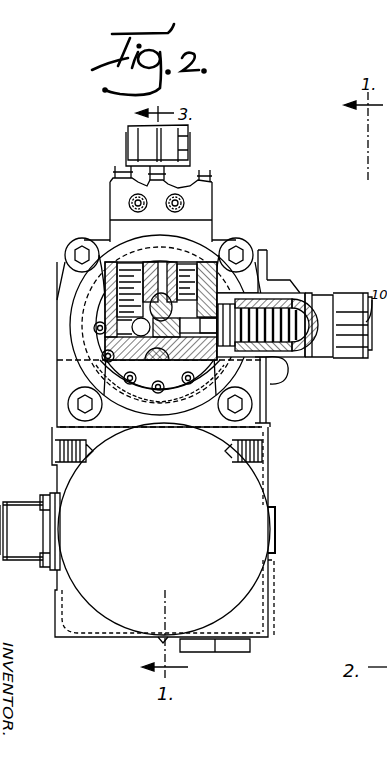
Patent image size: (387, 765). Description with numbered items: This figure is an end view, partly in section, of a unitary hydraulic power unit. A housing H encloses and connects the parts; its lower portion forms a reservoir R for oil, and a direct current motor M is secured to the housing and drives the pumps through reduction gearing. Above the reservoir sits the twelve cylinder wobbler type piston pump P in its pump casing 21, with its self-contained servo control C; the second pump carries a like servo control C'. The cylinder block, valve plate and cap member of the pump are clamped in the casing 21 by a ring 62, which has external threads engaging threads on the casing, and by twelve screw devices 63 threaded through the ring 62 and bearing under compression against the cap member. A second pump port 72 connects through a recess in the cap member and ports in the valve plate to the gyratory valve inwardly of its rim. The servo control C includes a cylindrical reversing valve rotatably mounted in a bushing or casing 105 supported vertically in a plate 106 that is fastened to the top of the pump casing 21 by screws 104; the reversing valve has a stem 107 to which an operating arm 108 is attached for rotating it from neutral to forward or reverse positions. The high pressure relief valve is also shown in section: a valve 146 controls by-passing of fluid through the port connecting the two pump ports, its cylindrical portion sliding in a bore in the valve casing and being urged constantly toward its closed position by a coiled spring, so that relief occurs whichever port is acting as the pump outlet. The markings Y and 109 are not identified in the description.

The stem 107 is at (142, 125).
The operating arm 108 is at (128, 143).
The screws 104 is at (178, 186).
The servo control C is at (179, 204).
The piston pump P is at (130, 250).
The bushing or casing 105 is at (190, 243).
The valve 146 is at (185, 319).
The second pump port 72 is at (125, 318).
The screw devices 63 is at (97, 340).
The ring 62 is at (92, 358).
The valve passage Y is at (246, 271).
The servo control C' is at (277, 306).
The passage 109 is at (272, 372).
The plate 106 is at (270, 390).
The casing or housing H is at (274, 484).
The direct current motor M is at (165, 515).
The pump casing 21 is at (127, 398).
The reservoir R is at (268, 583).